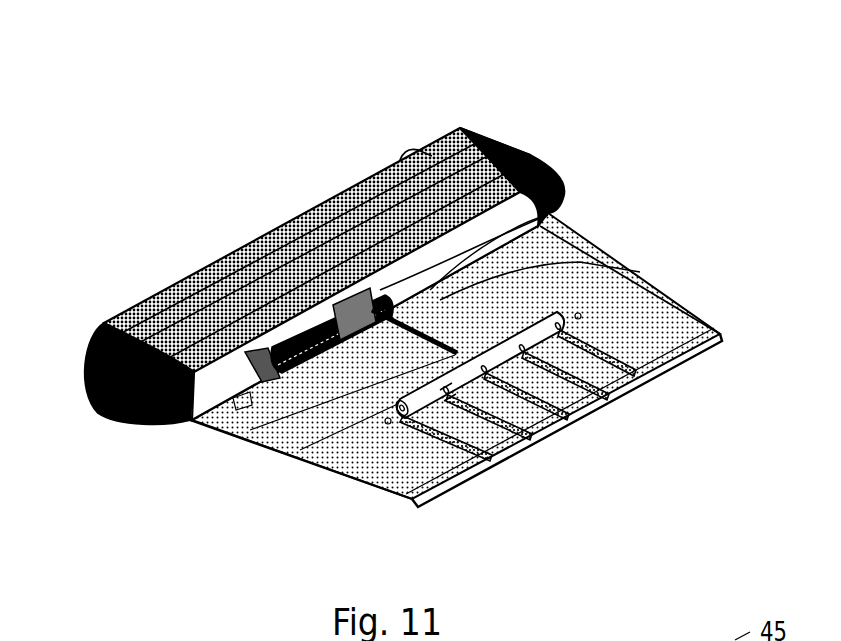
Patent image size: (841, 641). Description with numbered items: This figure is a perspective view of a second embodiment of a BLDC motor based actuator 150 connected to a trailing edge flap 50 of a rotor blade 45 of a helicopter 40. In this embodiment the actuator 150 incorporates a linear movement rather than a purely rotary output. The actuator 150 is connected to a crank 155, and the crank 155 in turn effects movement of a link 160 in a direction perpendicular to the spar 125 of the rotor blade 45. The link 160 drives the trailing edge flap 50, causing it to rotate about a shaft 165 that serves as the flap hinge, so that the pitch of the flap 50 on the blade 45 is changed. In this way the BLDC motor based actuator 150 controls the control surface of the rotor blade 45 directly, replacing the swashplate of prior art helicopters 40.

The rotor blade 45 is at (403, 317).
The spar 125 is at (482, 153).
The BLDC motor based actuator 150 is at (280, 345).
The crank 155 is at (560, 222).
The link 160 is at (620, 278).
The shaft 165 is at (386, 423).
The helicopter 40 is at (233, 398).
The trailing edge flap 50 is at (598, 415).